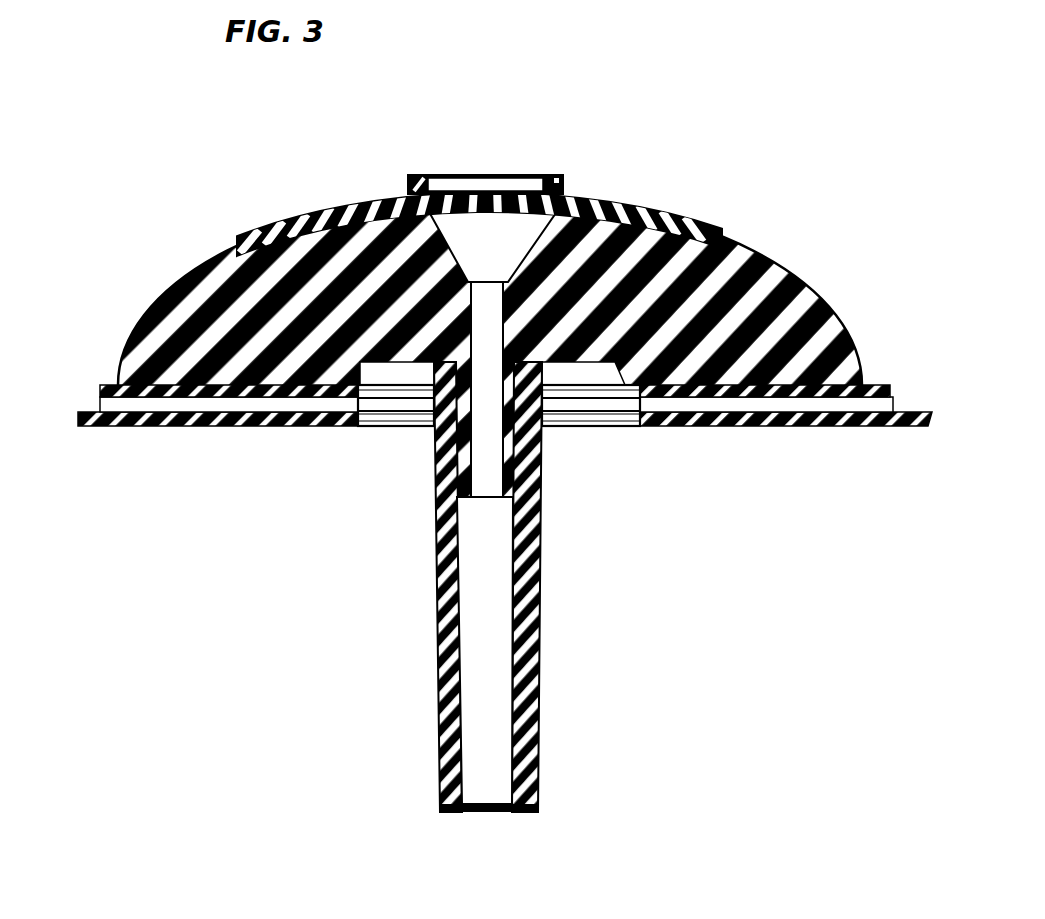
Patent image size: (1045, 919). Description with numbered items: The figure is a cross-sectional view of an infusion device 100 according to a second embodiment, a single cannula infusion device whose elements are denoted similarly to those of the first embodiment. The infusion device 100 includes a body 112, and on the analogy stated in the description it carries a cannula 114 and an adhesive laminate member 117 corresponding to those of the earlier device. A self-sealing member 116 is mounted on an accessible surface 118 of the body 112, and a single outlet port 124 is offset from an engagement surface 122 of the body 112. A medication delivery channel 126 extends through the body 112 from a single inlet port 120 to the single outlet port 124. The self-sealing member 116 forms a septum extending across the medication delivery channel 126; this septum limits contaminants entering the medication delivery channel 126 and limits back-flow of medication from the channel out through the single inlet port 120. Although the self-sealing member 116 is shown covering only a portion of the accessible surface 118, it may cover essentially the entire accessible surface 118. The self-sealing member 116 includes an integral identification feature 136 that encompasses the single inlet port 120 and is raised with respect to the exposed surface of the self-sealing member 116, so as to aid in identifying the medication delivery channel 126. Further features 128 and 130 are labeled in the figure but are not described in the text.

The infusion device 100 is at (264, 181).
The body 112 is at (760, 251).
The tubular stem 114 is at (540, 597).
The self-sealing member 116 is at (643, 207).
The base plate layers 117 is at (82, 383).
The accessible surface 118 is at (238, 260).
The single inlet port 120 is at (457, 168).
The engagement surface 122 is at (182, 395).
The single outlet port 124 is at (470, 533).
The medication delivery channel 126 is at (508, 283).
The stem bore 128 is at (481, 738).
The light channel 130 is at (494, 290).
The identification feature 136 is at (440, 205).